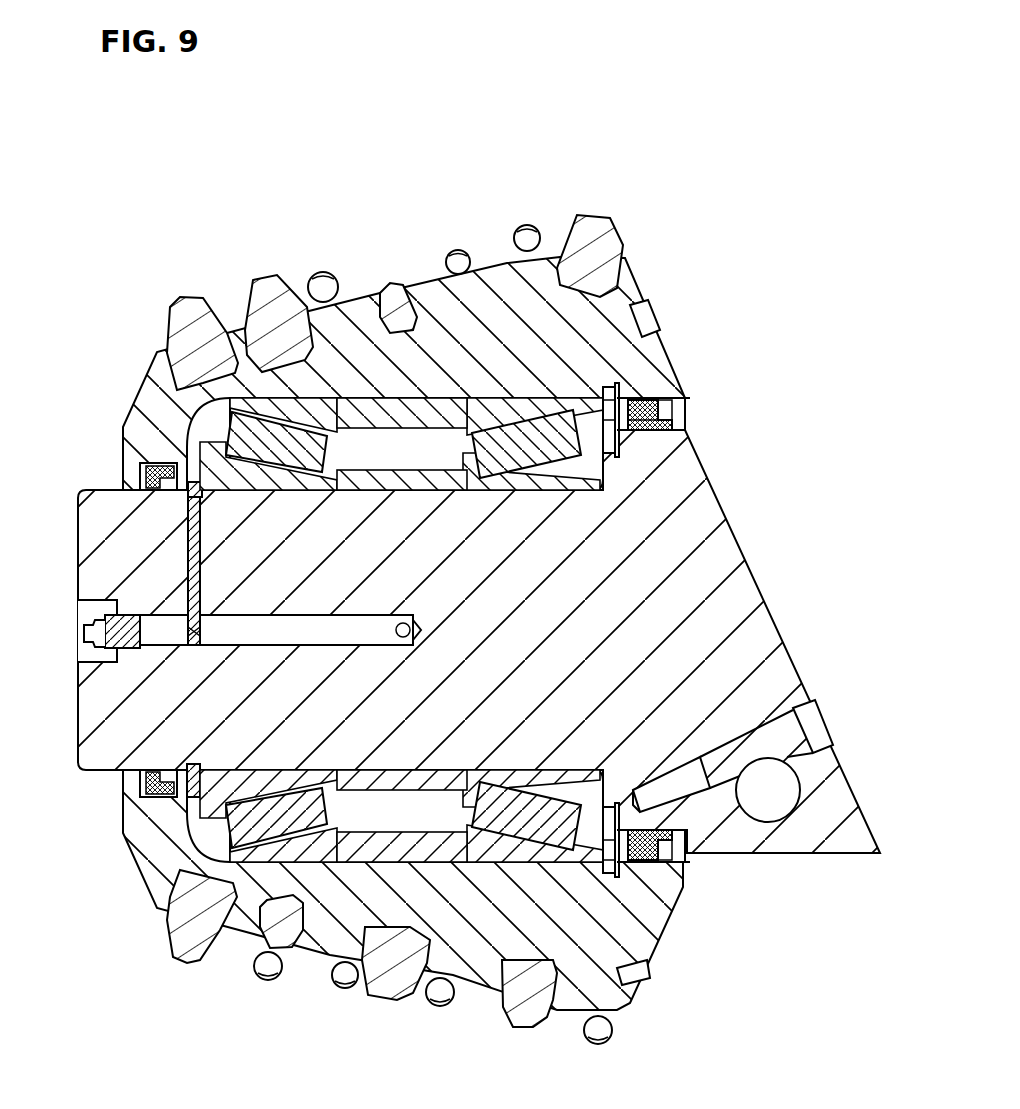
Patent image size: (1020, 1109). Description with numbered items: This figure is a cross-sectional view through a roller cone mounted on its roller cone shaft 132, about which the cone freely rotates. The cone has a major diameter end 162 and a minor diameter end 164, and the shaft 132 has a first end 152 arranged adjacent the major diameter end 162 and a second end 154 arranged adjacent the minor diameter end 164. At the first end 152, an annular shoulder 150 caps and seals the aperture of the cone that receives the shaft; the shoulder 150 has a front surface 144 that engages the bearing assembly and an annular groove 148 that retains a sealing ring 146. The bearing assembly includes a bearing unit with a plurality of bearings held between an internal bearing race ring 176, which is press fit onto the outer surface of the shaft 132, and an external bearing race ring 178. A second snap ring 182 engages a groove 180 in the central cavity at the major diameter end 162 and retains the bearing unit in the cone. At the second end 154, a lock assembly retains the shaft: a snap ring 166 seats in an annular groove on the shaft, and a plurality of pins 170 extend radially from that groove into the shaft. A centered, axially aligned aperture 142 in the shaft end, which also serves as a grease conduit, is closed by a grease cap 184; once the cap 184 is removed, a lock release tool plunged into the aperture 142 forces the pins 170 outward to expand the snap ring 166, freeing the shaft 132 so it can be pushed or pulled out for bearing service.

The roller cone shaft 132 is at (559, 643).
The aperture 142 is at (279, 639).
The front surface 144 is at (637, 463).
The sealing ring 146 is at (688, 400).
The annular groove 148 is at (660, 412).
The annular shoulder 150 is at (665, 443).
The first end 152 is at (866, 814).
The second end 154 is at (80, 763).
The major diameter end 162 is at (660, 288).
The minor diameter end 164 is at (116, 418).
The snap ring 166 is at (197, 487).
The pins 170 is at (199, 581).
The internal bearing race ring 176 is at (533, 483).
The external bearing race ring 178 is at (517, 410).
The groove 180 is at (606, 396).
The second snap ring 182 is at (621, 398).
The grease cap 184 is at (95, 632).